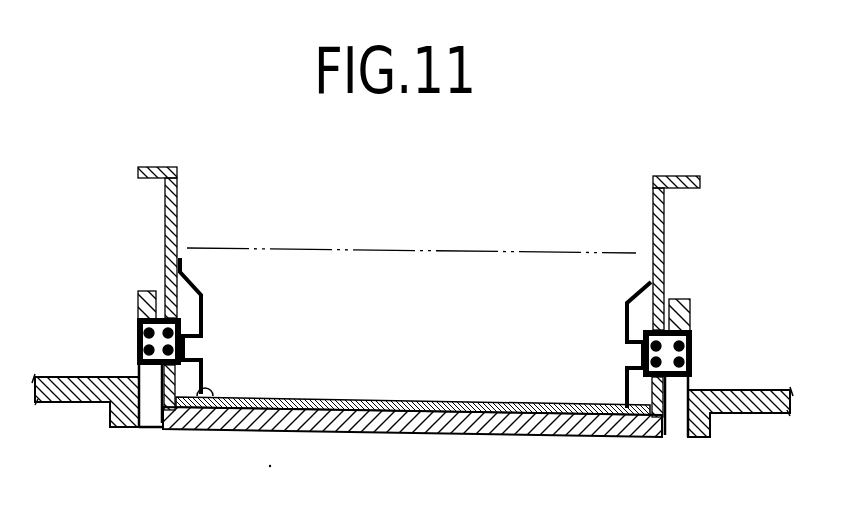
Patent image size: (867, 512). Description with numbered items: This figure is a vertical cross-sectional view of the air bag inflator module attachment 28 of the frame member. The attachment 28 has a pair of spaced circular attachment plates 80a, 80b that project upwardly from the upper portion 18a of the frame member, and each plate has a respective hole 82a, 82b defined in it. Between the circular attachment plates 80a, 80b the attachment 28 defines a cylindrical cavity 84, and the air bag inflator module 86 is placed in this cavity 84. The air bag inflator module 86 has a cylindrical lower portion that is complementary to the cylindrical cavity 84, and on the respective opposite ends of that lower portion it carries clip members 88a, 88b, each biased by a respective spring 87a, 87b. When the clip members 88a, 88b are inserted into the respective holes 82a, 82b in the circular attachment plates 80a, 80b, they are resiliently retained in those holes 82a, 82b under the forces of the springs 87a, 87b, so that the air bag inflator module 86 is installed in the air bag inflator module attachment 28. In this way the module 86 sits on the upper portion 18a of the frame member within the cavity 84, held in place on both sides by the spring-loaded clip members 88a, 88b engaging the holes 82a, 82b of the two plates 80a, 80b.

The upper portion 18a is at (722, 390).
The air bag inflator module attachment 28 is at (653, 321).
The circular attachment plate 80a is at (146, 290).
The circular attachment plate 80b is at (682, 298).
The hole 82a is at (114, 317).
The hole 82b is at (720, 326).
The cylindrical cavity 84 is at (216, 414).
The air bag inflator module 86 is at (663, 172).
The spring 87a is at (186, 346).
The spring 87b is at (640, 348).
The clip member 88a is at (137, 348).
The clip member 88b is at (696, 356).